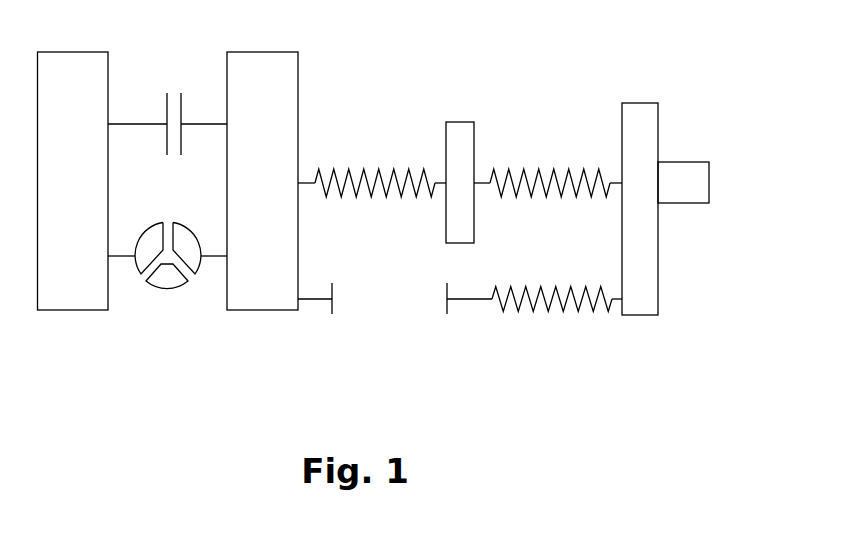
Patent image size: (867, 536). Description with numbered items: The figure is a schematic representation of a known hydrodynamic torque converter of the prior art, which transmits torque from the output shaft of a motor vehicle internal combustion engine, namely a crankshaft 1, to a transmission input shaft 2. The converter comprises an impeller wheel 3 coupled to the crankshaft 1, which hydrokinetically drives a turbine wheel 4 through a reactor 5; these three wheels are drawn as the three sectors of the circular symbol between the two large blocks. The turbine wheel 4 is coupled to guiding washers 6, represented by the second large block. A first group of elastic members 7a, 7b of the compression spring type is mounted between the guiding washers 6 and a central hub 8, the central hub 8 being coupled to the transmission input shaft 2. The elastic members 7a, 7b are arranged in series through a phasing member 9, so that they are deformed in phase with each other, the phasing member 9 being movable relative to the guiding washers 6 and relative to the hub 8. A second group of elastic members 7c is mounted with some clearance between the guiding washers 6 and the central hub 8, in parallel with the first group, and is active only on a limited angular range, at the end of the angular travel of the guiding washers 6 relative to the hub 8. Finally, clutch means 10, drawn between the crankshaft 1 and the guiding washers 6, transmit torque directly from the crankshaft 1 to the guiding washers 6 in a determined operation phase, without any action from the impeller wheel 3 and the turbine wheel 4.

The crankshaft 1 is at (75, 283).
The transmission input shaft 2 is at (677, 175).
The impeller wheel 3 is at (140, 263).
The turbine wheel 4 is at (193, 261).
The reactor 5 is at (168, 277).
The guiding washers 6 is at (273, 85).
The elastic member of the first group 7a is at (377, 173).
The elastic member of the first group 7b is at (538, 173).
The elastic member of the second group 7c is at (557, 307).
The central hub 8 is at (635, 115).
The phasing member 9 is at (457, 135).
The clutch means 10 is at (174, 90).